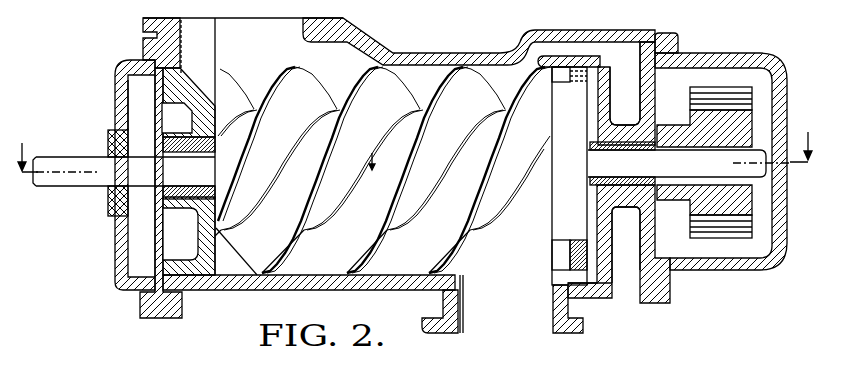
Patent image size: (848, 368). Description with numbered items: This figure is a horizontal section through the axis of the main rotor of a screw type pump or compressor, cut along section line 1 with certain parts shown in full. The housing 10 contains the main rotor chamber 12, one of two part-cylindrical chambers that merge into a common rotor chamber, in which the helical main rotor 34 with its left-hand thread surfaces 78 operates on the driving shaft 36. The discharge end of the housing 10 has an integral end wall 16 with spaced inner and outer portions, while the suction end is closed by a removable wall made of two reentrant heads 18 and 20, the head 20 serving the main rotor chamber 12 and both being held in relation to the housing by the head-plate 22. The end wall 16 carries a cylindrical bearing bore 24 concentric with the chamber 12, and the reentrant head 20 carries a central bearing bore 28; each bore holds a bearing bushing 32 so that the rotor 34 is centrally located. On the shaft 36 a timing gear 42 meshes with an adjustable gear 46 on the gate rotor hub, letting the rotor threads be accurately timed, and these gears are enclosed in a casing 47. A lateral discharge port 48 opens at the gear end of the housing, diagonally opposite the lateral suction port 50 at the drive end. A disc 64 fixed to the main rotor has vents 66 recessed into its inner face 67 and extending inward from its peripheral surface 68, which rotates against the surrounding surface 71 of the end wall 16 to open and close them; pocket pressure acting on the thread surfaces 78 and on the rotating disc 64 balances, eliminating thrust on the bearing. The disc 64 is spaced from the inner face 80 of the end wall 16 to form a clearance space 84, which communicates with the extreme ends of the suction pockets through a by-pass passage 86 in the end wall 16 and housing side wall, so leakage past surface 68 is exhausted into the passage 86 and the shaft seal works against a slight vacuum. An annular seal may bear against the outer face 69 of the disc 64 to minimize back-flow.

The section line 1 is at (414, 137).
The housing 10 is at (516, 26).
The main rotor chamber 12 is at (302, 270).
The end wall 16 is at (627, 300).
The reentrant head 18 is at (177, 159).
The reentrant head 20 is at (199, 247).
The head-plate 22 is at (128, 84).
The cylindrical bearing bore 24 is at (663, 125).
The cylindrical bearing bore 28 is at (162, 200).
The bearing bushing 32 is at (170, 145).
The main rotor 34 is at (248, 260).
The driving shaft 36 is at (35, 192).
The timing gear 42 is at (748, 103).
The gear 46 is at (728, 90).
The casing 47 is at (782, 238).
The lateral discharge port 48 is at (480, 316).
The lateral suction port 50 is at (214, 26).
The disc 64 is at (569, 176).
The vents 66 is at (562, 72).
The inner face 67 is at (550, 108).
The peripheral surface 68 is at (594, 286).
The outer face 69 is at (592, 128).
The surrounding surface 71 is at (553, 278).
The thread surfaces 78 is at (370, 92).
The inner face 80 is at (597, 254).
The clearance space 84 is at (602, 246).
The by-pass passage 86 is at (569, 54).